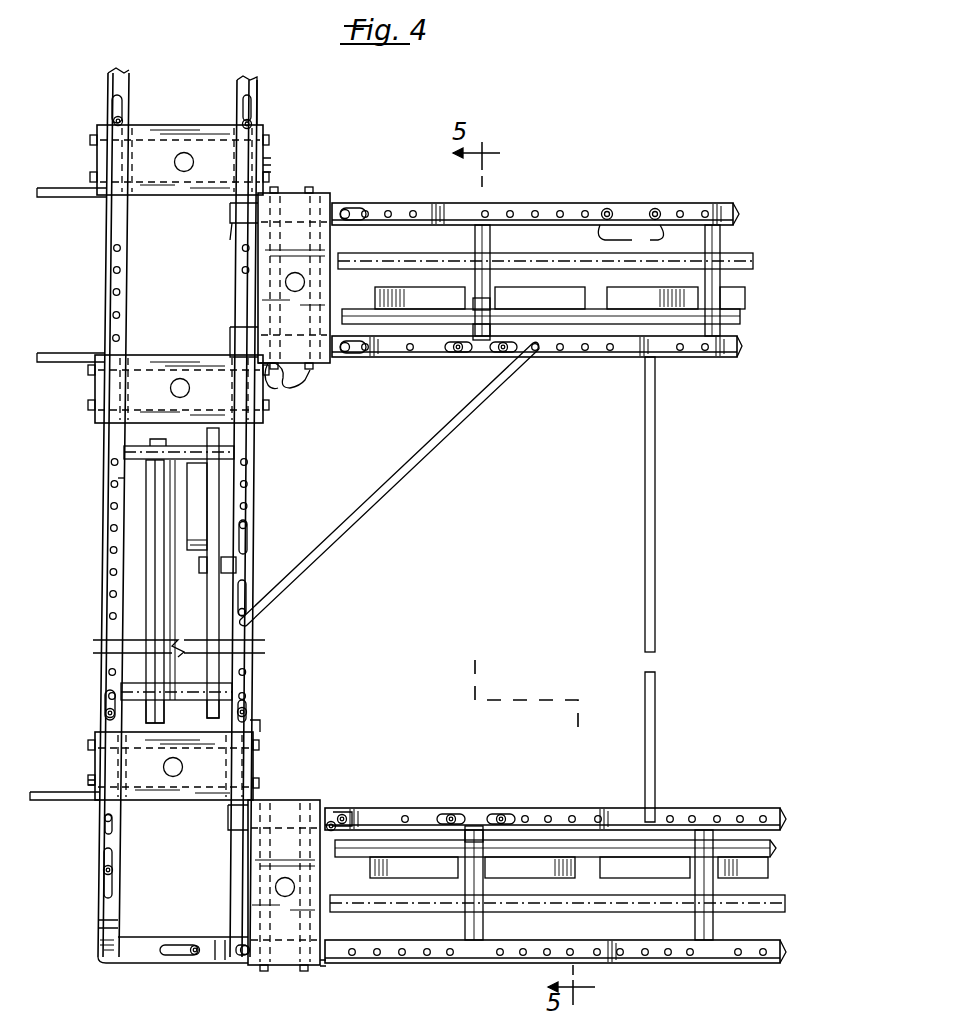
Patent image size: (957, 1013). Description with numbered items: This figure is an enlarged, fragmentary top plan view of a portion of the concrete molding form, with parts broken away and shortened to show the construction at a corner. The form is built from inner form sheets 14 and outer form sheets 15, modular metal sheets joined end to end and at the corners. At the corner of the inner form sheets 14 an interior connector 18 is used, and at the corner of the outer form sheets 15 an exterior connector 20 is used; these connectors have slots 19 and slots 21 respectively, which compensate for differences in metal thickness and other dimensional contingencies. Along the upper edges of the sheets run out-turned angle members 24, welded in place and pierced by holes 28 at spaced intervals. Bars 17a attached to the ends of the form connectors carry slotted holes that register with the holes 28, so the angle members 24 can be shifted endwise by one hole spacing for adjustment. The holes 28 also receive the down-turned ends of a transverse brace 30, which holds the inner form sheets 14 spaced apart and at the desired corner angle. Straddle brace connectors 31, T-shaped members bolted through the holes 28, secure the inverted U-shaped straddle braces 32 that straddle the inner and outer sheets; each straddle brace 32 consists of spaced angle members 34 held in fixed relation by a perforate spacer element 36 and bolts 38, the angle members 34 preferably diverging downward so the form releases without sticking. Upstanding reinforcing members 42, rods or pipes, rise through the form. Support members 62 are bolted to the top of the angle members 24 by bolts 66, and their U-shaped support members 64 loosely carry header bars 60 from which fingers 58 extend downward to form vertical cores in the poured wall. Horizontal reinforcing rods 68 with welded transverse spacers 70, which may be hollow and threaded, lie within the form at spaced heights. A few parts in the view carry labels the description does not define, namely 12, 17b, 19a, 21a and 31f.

The top channel rail 12 is at (545, 206).
The inner form sheets 14 is at (252, 507).
The outer form sheets 15 is at (78, 475).
The bars 17a is at (607, 207).
The bolt 17b is at (670, 186).
The interior connectors 18 is at (258, 110).
The slots 19 is at (253, 124).
The bracket bolt 19a is at (248, 712).
The exterior connectors 20 is at (100, 940).
The slots 21 is at (104, 890).
The slot bolt 21a is at (104, 870).
The out-turned angle members 24 is at (108, 575).
The holes 28 is at (113, 250).
The transverse braces 30 is at (645, 368).
The straddle brace connectors 31 is at (110, 103).
The bracket fastener 31f is at (113, 121).
The straddle braces 32 is at (272, 150).
The angle members 34 is at (268, 168).
The perforate spacer element 36 is at (150, 140).
The bolts 38 is at (290, 388).
The reinforcing members 42 is at (184, 162).
The fingers 58 is at (730, 290).
The header bars 60 is at (740, 318).
The support member 62 is at (478, 340).
The U-shaped support members 64 is at (478, 300).
The bolts 66 is at (455, 352).
The horizontal reinforcing rods 68 is at (753, 261).
The transverse spacers 70 is at (482, 240).